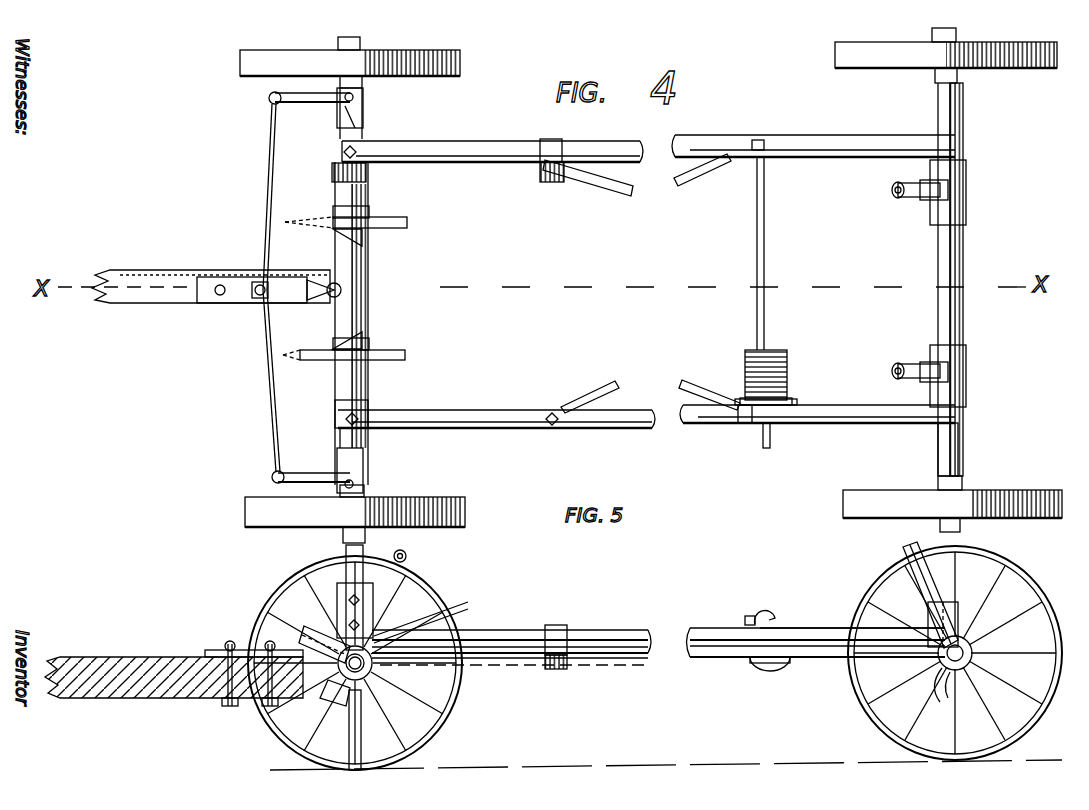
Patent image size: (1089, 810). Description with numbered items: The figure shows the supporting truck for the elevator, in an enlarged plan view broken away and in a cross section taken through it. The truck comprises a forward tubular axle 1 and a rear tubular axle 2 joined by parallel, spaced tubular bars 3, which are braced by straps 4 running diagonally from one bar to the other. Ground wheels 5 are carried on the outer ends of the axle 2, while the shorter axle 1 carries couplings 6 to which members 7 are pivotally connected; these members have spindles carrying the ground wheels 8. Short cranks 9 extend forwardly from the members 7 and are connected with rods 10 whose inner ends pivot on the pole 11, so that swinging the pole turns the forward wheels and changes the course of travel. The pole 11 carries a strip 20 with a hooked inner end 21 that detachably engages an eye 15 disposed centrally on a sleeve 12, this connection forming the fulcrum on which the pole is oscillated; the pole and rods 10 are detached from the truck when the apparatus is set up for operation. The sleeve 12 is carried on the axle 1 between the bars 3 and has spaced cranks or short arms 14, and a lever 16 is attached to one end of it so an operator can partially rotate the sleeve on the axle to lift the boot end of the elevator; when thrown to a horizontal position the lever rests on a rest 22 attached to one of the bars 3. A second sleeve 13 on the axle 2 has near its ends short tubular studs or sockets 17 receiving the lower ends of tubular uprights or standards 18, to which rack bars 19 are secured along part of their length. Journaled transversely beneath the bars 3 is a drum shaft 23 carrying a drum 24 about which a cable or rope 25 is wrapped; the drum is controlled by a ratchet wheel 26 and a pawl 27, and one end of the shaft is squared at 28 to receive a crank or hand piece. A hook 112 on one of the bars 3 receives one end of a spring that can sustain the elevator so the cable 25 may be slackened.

In FIG. 4, the forward tubular axle 1 is at (336, 440).
In FIG. 5, the forward tubular axle 1 is at (382, 668).
In FIG. 4, the rear tubular axle 2 is at (940, 436).
In FIG. 5, the rear tubular axle 2 is at (982, 650).
In FIG. 4, the tubular bars 3 is at (502, 160).
In FIG. 5, the tubular bars 3 is at (605, 632).
In FIG. 4, the straps 4 is at (700, 170).
In FIG. 5, the straps 4 is at (712, 659).
In FIG. 4, the ground wheels 5 is at (1010, 62).
In FIG. 5, the ground wheels 5 is at (990, 582).
In FIG. 4, the couplings 6 is at (360, 110).
In FIG. 4, the members 7 is at (965, 198).
In FIG. 4, the ground wheels 8 is at (452, 70).
In FIG. 5, the ground wheels 8 is at (446, 682).
In FIG. 4, the short cranks 9 is at (300, 93).
In FIG. 5, the short cranks 9 is at (430, 616).
In FIG. 4, the rods 10 is at (268, 170).
In FIG. 5, the rods 10 is at (407, 556).
In FIG. 4, the pole 11 is at (148, 280).
In FIG. 5, the pole 11 is at (118, 646).
In FIG. 4, the sleeve 12 is at (360, 330).
In FIG. 5, the sleeve 12 is at (368, 712).
In FIG. 4, the sleeve 13 is at (952, 322).
In FIG. 5, the sleeve 13 is at (940, 695).
In FIG. 4, the cranks or short arms 14 is at (408, 215).
In FIG. 5, the cranks or short arms 14 is at (322, 640).
In FIG. 4, the eye 15 is at (330, 298).
In FIG. 5, the eye 15 is at (350, 708).
In FIG. 4, the lever 16 is at (336, 170).
In FIG. 4, the tubular studs or sockets 17 is at (968, 372).
In FIG. 5, the tubular studs or sockets 17 is at (960, 612).
In FIG. 4, the tubular uprights or standards 18 is at (915, 364).
In FIG. 4, the rack bars 19 is at (912, 194).
In FIG. 4, the strip 20 is at (228, 302).
In FIG. 5, the strip 20 is at (213, 648).
In FIG. 5, the hooked inner end 21 is at (332, 692).
In FIG. 4, the rest 22 is at (548, 180).
In FIG. 5, the rest 22 is at (558, 672).
In FIG. 4, the drum shaft 23 is at (798, 243).
In FIG. 5, the drum shaft 23 is at (785, 638).
In FIG. 4, the drum 24 is at (782, 352).
In FIG. 5, the drum 24 is at (772, 664).
In FIG. 4, the cable or rope 25 is at (748, 368).
In FIG. 4, the ratchet wheel 26 is at (792, 402).
In FIG. 4, the pawl 27 is at (742, 424).
In FIG. 4, the squared end 28 is at (764, 448).
In FIG. 5, the hook 112 is at (780, 614).